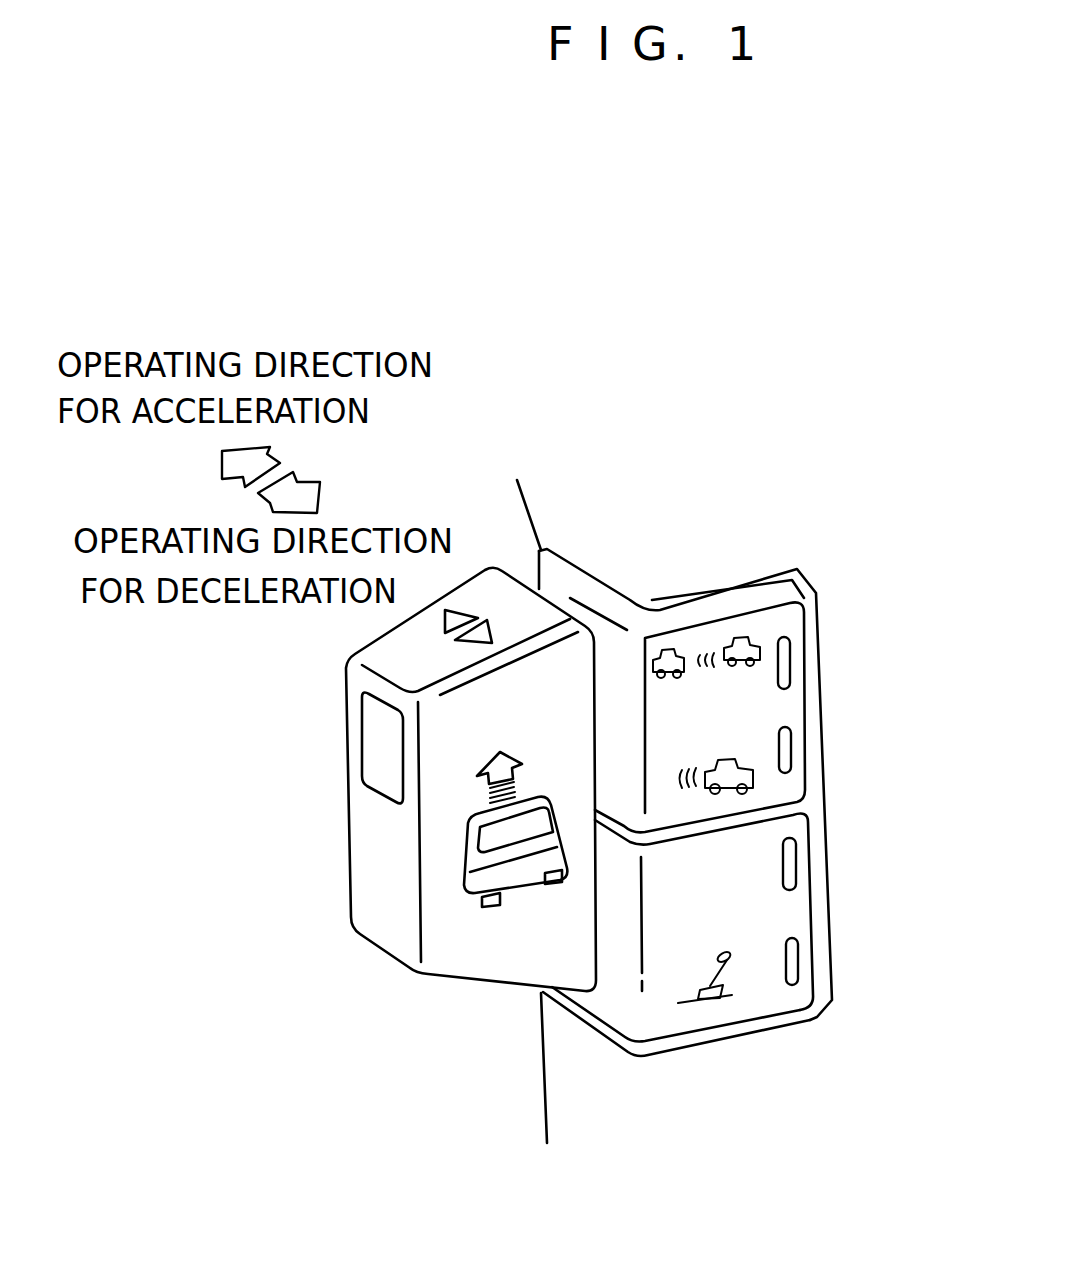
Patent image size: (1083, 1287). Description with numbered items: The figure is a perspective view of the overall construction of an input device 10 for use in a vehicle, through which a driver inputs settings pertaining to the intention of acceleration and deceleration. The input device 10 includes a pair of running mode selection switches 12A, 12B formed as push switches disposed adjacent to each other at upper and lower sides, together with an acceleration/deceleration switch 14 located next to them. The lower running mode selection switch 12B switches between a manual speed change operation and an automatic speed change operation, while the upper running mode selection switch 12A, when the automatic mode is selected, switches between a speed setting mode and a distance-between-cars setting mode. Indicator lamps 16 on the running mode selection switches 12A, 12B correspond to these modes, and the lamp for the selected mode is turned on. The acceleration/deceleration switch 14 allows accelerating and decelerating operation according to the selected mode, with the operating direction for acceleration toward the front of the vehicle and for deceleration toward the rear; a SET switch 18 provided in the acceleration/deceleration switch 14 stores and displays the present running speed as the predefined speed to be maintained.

The input device 10 is at (470, 488).
The upper running mode selection switch 12A is at (797, 716).
The lower running mode selection switch 12B is at (791, 923).
The acceleration/deceleration switch 14 is at (384, 878).
The indicator lamps 16 is at (791, 670).
The SET switch 18 is at (378, 755).